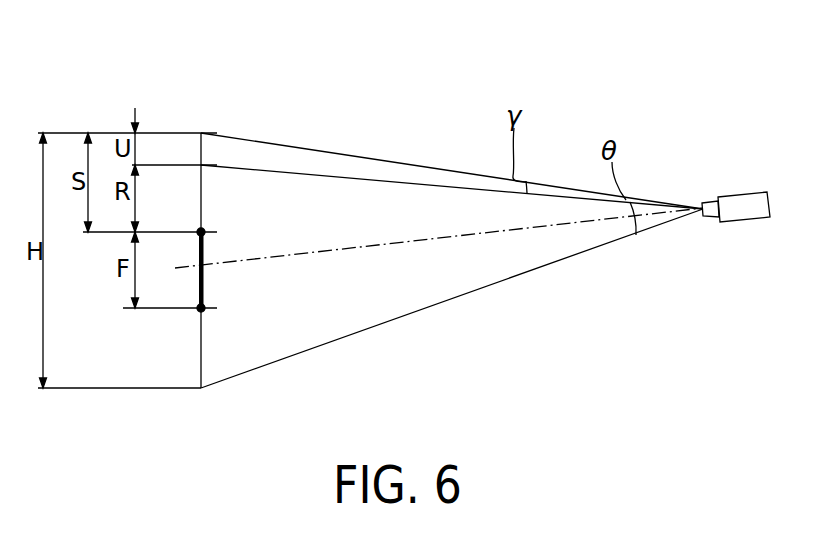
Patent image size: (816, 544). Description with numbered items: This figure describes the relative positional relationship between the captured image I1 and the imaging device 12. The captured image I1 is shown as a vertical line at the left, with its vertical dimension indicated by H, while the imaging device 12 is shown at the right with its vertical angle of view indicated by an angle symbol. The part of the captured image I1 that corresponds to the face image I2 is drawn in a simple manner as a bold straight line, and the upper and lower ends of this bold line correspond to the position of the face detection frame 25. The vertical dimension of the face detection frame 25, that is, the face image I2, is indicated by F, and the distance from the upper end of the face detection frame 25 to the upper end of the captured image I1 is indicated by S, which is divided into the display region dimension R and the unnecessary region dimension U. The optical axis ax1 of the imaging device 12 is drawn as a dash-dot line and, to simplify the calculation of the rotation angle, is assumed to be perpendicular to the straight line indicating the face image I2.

The captured image I1 is at (201, 124).
The face image I2 is at (214, 285).
The imaging device 12 is at (740, 203).
The face detection frame 25 is at (201, 308).
The optical axis ax1 is at (340, 249).